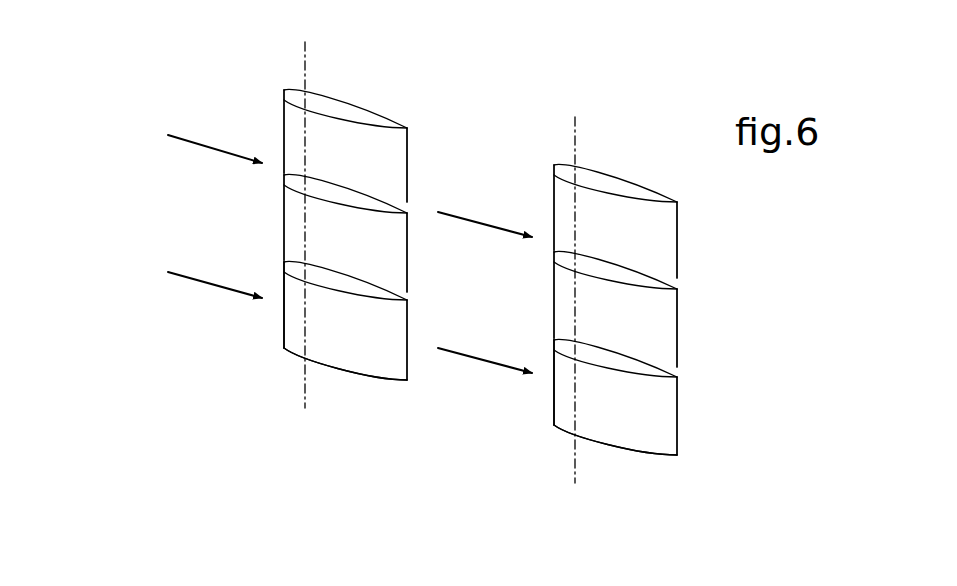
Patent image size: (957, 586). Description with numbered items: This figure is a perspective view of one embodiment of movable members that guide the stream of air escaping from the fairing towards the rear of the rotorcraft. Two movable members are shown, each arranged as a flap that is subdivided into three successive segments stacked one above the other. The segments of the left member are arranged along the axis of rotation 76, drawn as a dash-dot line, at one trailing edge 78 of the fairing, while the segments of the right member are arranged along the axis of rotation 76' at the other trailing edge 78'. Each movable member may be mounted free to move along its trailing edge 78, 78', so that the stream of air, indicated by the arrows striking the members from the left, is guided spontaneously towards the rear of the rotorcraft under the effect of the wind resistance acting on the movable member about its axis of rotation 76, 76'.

The axis of rotation 76 is at (268, 210).
The axis of rotation 76' is at (614, 285).
The trailing edge 78 is at (261, 355).
The trailing edge 78' is at (511, 398).